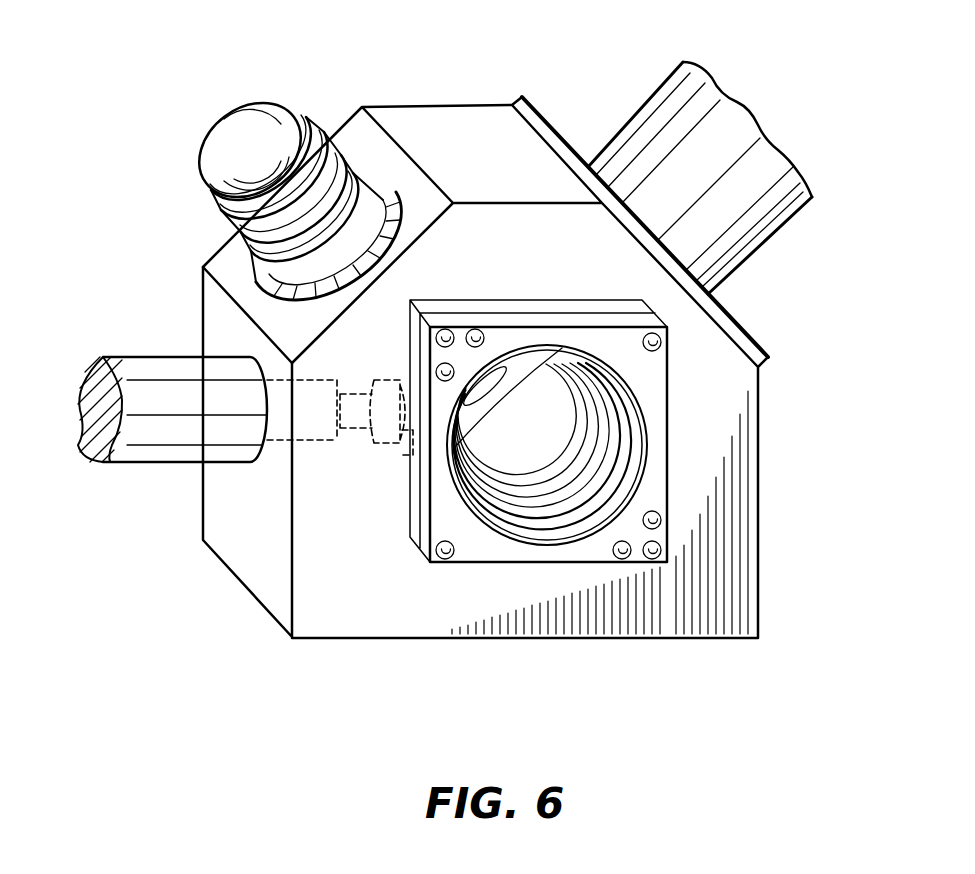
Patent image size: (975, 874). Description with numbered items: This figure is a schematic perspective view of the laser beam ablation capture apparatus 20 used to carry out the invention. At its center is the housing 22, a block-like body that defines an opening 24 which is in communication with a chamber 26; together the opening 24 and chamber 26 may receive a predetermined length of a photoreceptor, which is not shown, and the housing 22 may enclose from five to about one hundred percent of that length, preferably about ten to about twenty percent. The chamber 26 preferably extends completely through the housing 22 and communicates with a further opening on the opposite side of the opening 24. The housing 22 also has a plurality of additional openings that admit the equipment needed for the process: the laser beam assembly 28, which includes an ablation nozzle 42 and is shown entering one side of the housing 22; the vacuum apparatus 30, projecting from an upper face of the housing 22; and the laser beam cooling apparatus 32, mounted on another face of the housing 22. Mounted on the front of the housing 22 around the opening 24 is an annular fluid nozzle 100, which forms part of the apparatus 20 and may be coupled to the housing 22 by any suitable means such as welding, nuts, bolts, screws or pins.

The laser beam ablation capture apparatus 20 is at (262, 623).
The housing 22 is at (215, 310).
The opening 24 is at (617, 390).
The chamber 26 is at (486, 463).
The laser beam assembly 28 is at (70, 430).
The vacuum apparatus 30 is at (658, 100).
The laser beam cooling apparatus 32 is at (218, 143).
The ablation nozzle 42 is at (353, 447).
The annular fluid nozzle 100 is at (550, 294).